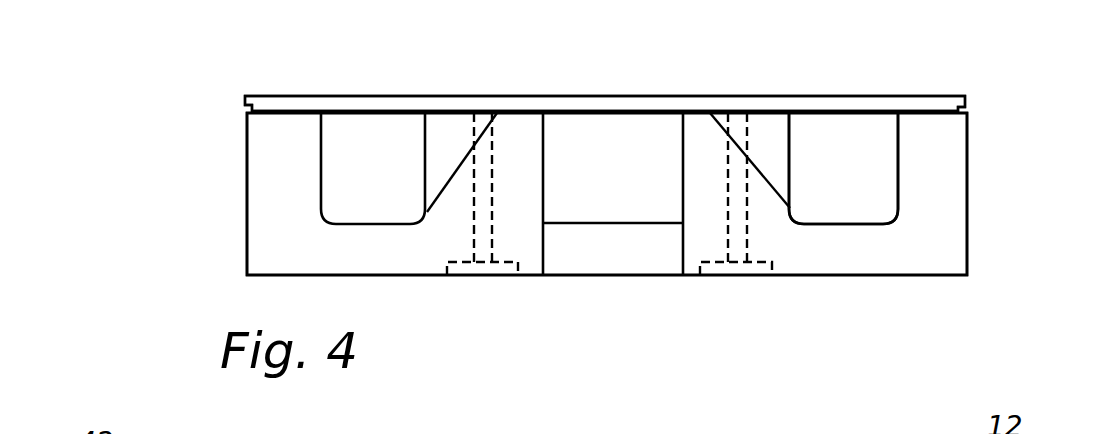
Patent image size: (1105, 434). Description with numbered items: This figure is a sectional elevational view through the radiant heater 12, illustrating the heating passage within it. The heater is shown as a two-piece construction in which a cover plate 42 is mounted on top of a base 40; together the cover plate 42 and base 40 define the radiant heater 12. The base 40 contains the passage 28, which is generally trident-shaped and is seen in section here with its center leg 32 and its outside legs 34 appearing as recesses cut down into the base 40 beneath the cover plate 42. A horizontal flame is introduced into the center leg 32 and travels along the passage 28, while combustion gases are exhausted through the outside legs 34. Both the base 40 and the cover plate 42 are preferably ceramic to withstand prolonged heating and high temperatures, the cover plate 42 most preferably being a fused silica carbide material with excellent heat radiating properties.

The radiant heater 12 is at (977, 100).
The passage 28 is at (857, 180).
The center leg 32 is at (544, 135).
The outside legs 34 is at (322, 137).
The base 40 is at (280, 238).
The cover plate 42 is at (310, 97).